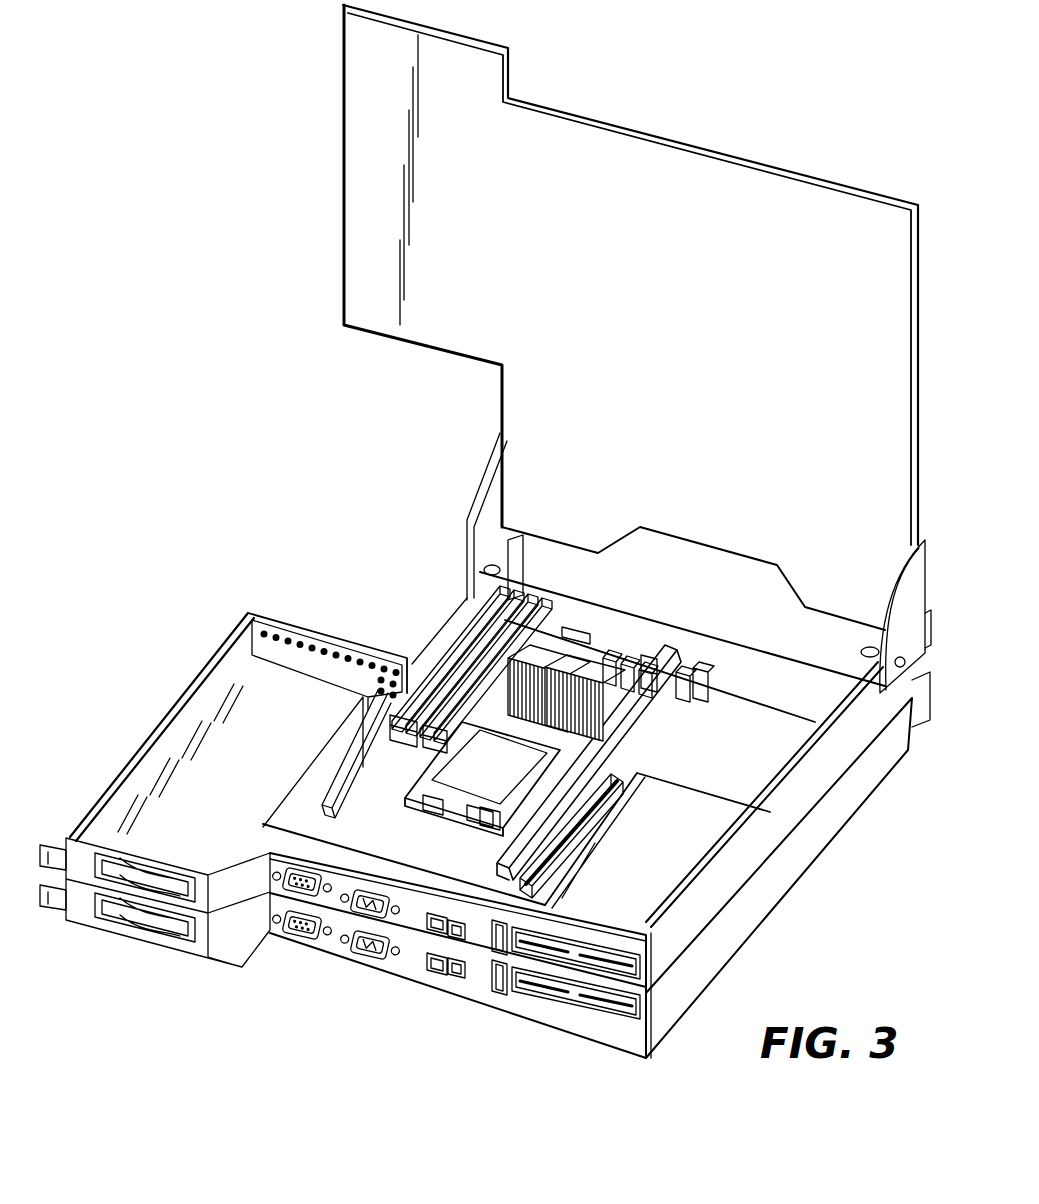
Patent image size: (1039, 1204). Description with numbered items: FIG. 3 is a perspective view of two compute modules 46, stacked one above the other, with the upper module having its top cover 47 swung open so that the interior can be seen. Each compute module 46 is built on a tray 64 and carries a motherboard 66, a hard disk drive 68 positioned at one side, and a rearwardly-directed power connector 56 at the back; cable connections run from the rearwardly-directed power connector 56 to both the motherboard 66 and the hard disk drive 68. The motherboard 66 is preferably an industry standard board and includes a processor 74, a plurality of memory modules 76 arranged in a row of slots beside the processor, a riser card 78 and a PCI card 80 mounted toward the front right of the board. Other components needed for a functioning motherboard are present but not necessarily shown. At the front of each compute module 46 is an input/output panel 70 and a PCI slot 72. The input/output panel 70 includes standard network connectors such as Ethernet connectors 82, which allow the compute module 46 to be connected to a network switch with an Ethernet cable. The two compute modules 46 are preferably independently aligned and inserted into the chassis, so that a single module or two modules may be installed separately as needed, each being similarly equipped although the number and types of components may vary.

The top cover 47 is at (858, 233).
The compute module 46 is at (787, 800).
The tray 64 is at (722, 638).
The motherboard 66 is at (753, 765).
The rearwardly-directed power connector 56 is at (282, 660).
The hard disk drive 68 is at (260, 782).
The memory modules 76 is at (485, 645).
The processor 74 is at (468, 778).
The riser card 78 is at (605, 820).
The PCI card 80 is at (667, 870).
The input/output panel 70 is at (340, 878).
The Ethernet connectors 82 is at (445, 925).
The PCI slot 72 is at (575, 965).